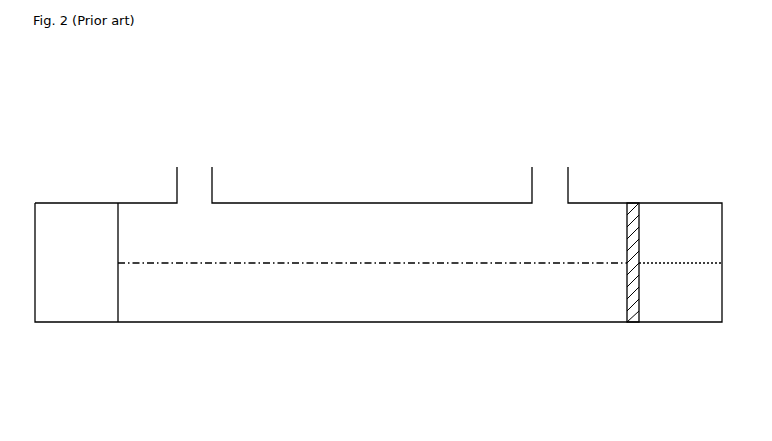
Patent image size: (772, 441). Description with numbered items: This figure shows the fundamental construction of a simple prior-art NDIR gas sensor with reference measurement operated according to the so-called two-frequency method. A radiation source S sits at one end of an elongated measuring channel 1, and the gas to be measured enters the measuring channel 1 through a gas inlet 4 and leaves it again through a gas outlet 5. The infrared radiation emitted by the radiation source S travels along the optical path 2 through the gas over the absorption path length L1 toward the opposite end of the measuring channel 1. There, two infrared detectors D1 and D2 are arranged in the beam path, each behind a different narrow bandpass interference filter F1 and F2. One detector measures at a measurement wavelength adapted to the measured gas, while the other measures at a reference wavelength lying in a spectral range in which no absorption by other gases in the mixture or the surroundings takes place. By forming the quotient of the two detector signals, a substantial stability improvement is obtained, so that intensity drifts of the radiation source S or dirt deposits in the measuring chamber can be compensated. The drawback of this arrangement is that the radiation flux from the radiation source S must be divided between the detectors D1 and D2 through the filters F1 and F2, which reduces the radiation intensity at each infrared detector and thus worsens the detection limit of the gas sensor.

The measuring channel 1 is at (331, 232).
The optical path 2 is at (448, 263).
The gas inlet 4 is at (195, 167).
The gas outlet 5 is at (550, 167).
The radiation source S is at (93, 262).
The absorption path length 1 L1 is at (397, 242).
The filter 1 F1 is at (633, 203).
The filter 2 F2 is at (632, 322).
The detector 1 D1 is at (680, 244).
The detector 2 D2 is at (675, 294).